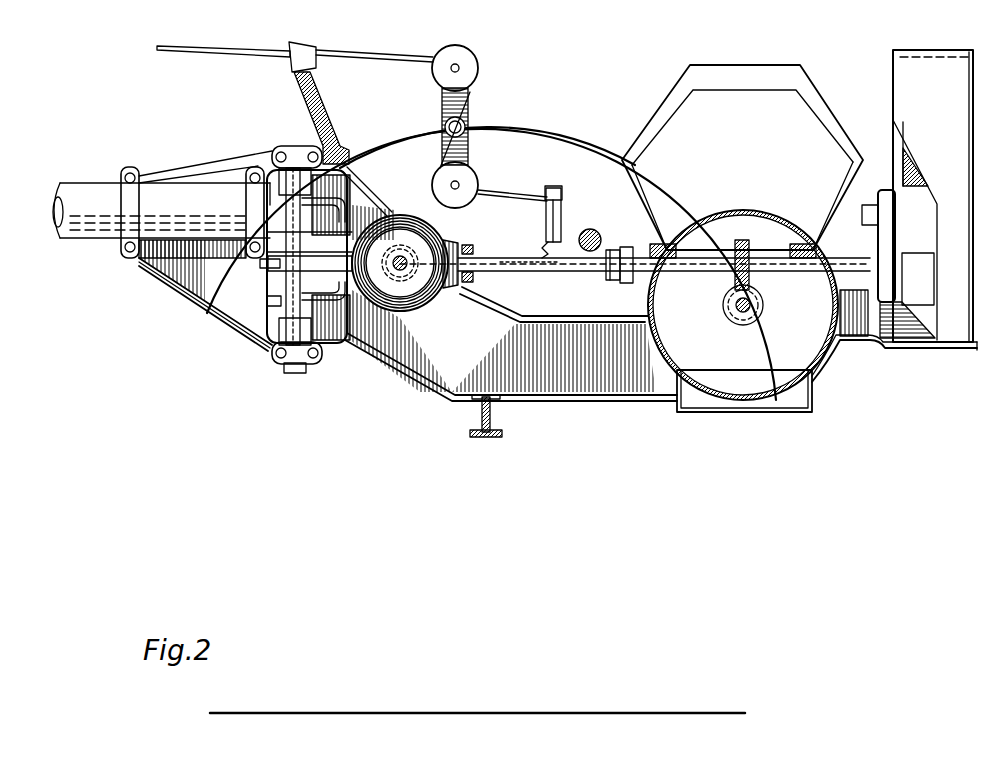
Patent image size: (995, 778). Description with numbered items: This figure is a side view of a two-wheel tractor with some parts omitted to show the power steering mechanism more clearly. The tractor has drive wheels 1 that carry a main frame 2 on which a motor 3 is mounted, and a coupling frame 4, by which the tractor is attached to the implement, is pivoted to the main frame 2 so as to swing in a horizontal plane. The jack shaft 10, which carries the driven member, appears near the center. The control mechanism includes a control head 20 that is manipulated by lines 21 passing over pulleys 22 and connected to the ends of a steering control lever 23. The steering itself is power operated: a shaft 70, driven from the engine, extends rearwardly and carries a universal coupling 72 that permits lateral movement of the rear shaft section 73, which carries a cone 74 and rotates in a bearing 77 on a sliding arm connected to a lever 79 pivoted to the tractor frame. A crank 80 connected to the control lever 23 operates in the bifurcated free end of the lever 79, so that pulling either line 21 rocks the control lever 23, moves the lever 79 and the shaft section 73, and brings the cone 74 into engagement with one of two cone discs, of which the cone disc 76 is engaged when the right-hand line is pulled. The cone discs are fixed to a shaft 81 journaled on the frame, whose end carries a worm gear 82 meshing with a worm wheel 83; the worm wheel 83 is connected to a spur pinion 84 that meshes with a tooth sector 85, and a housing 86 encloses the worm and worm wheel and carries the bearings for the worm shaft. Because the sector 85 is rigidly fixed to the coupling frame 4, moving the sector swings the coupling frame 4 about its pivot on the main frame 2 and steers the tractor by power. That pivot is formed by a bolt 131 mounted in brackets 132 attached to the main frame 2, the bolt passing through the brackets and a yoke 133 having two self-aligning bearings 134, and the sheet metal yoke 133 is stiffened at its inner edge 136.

The drive wheel 1 is at (762, 518).
The main frame 2 is at (340, 340).
The motor 3 is at (768, 64).
The coupling frame 4 is at (150, 272).
The jack shaft 10 is at (599, 233).
The control head 20 is at (468, 118).
The line 21 is at (205, 38).
The pulley 22 is at (470, 58).
The steering control lever 23 is at (560, 190).
The shaft 70 is at (690, 280).
The universal coupling 72 is at (628, 285).
The rear shaft section 73 is at (600, 269).
The cone 74 is at (450, 243).
The cone disc 76 is at (473, 248).
The bearing 77 is at (512, 446).
The lever 79 is at (635, 273).
The crank 80 is at (541, 250).
The shaft 81 is at (420, 280).
The worm gear 82 is at (410, 282).
The worm wheel 83 is at (383, 300).
The spur pinion 84 is at (372, 205).
The tooth sector 85 is at (275, 214).
The housing 86 is at (262, 266).
The bolt 131 is at (291, 148).
The bracket 132 is at (272, 154).
The yoke 133 is at (250, 337).
The self-aligning bearing 134 is at (292, 373).
The inner edge 136 is at (267, 300).